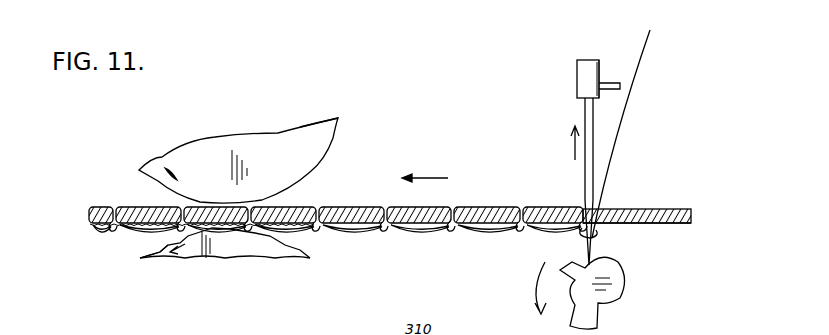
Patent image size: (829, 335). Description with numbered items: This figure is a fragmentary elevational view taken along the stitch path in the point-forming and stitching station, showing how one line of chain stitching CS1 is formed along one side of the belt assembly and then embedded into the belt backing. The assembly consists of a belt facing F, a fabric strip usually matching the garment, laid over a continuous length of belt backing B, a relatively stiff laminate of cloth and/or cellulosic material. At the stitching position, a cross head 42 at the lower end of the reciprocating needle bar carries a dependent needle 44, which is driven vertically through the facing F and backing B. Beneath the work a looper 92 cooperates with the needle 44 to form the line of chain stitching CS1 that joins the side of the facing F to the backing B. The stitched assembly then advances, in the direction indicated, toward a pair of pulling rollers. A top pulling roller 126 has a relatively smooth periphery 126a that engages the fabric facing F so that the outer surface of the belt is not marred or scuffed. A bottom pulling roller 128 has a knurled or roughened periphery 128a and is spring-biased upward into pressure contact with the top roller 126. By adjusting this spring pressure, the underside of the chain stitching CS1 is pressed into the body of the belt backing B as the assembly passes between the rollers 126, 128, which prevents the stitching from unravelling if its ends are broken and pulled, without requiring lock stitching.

The line of chain stitching CS1 is at (470, 206).
The belt facing F is at (645, 208).
The belt backing B is at (676, 224).
The top pulling roller 126 is at (277, 145).
The periphery of the top pulling roller 126a is at (337, 119).
The bottom pulling roller 128 is at (211, 258).
The periphery of the bottom pulling roller 128a is at (140, 255).
The cross head 42 is at (578, 80).
The needle 44 is at (583, 113).
The looper 92 is at (617, 287).